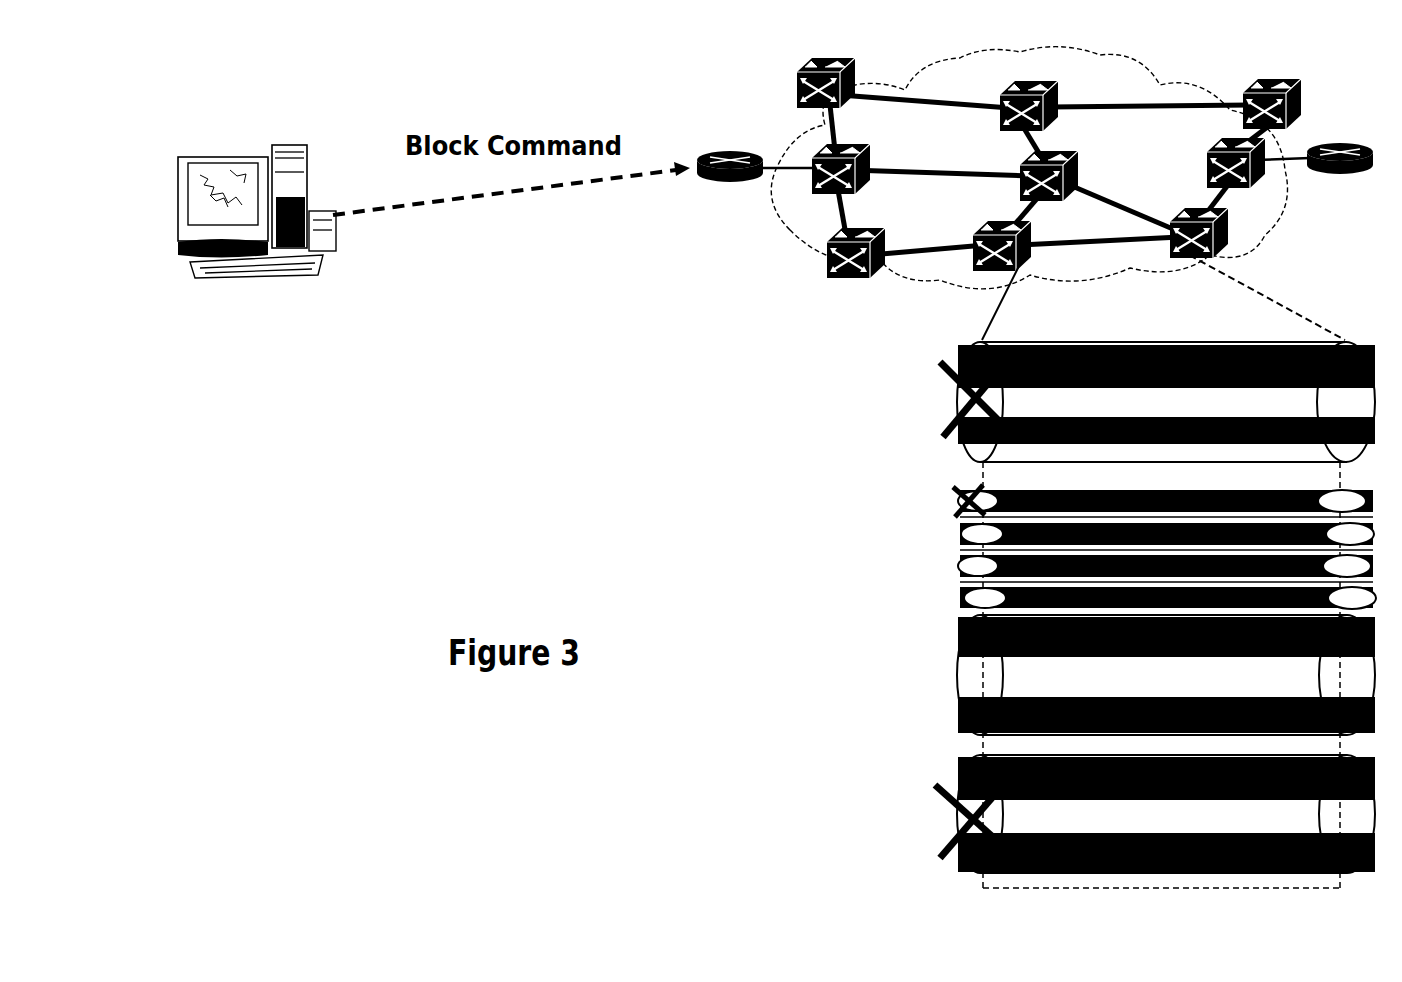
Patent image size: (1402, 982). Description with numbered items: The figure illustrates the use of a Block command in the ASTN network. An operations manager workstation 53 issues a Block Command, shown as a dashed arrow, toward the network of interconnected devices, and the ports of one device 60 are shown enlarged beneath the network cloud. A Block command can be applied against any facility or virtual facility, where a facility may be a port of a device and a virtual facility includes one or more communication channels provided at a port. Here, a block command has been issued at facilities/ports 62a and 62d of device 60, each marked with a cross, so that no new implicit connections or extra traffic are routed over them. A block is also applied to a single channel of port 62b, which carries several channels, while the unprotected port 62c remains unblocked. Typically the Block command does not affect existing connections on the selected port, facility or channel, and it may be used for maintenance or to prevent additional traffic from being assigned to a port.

The operations manager workstation 53 is at (298, 270).
The device 60 is at (1013, 268).
The facility/port 62a is at (952, 408).
The facility/port 62b is at (955, 550).
The facility/port 62c is at (955, 686).
The facility/port 62d is at (947, 825).